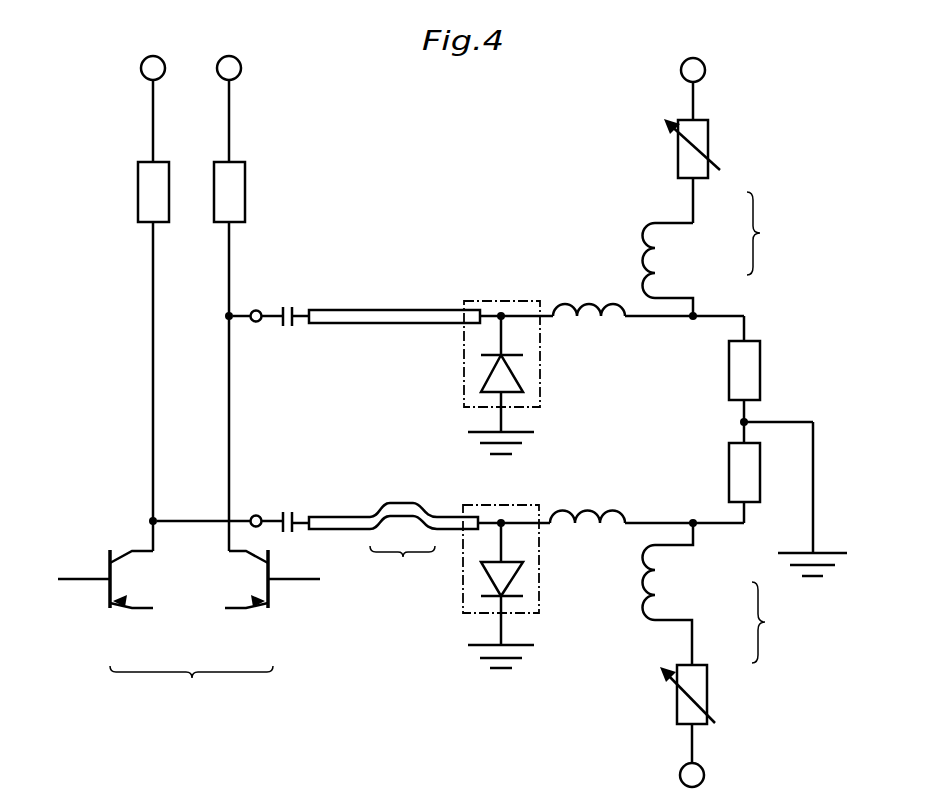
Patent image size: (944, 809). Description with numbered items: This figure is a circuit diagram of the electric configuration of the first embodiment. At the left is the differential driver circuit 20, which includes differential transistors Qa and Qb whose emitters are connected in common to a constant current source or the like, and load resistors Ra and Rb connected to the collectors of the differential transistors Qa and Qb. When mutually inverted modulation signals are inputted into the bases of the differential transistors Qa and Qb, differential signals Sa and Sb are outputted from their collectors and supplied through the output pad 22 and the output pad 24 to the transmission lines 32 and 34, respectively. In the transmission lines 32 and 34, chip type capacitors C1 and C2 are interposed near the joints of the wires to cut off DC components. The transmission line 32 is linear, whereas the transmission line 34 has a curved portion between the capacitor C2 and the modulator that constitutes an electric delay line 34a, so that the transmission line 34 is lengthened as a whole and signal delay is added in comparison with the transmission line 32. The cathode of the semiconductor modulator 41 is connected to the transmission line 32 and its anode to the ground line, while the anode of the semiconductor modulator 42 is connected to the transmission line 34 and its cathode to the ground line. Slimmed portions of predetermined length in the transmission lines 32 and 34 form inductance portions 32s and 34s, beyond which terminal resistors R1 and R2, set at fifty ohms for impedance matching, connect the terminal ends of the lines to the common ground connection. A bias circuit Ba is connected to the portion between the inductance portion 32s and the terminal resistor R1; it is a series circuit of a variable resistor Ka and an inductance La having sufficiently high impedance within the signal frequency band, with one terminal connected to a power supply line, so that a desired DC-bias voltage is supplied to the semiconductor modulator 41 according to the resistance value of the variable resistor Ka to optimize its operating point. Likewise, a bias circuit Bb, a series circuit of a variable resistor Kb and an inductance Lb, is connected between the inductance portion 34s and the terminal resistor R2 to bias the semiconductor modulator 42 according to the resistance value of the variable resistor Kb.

The load resistor Rb is at (147, 183).
The load resistor Ra is at (237, 178).
The differential signal Sa is at (244, 295).
The differential signal Sb is at (168, 500).
The output pad 22 is at (257, 323).
The output pad 24 is at (258, 512).
The chip type capacitor C1 is at (292, 303).
The chip type capacitor C2 is at (295, 508).
The transmission line 32 is at (370, 313).
The transmission line 34 is at (347, 516).
The electric delay line 34a is at (402, 568).
The inductance portion 32s is at (577, 308).
The inductance portion 34s is at (593, 513).
The semiconductor modulator 41 is at (463, 363).
The semiconductor modulator 42 is at (462, 607).
The variable resistor Ka is at (702, 173).
The inductance La is at (655, 278).
The bias circuit Ba is at (772, 233).
The variable resistor Kb is at (700, 670).
The inductance Lb is at (650, 585).
The bias circuit Bb is at (777, 622).
The terminal resistor R1 is at (733, 373).
The terminal resistor R2 is at (733, 468).
The differential transistor Qa is at (265, 610).
The differential transistor Qb is at (112, 610).
The differential driver circuit 20 is at (191, 690).